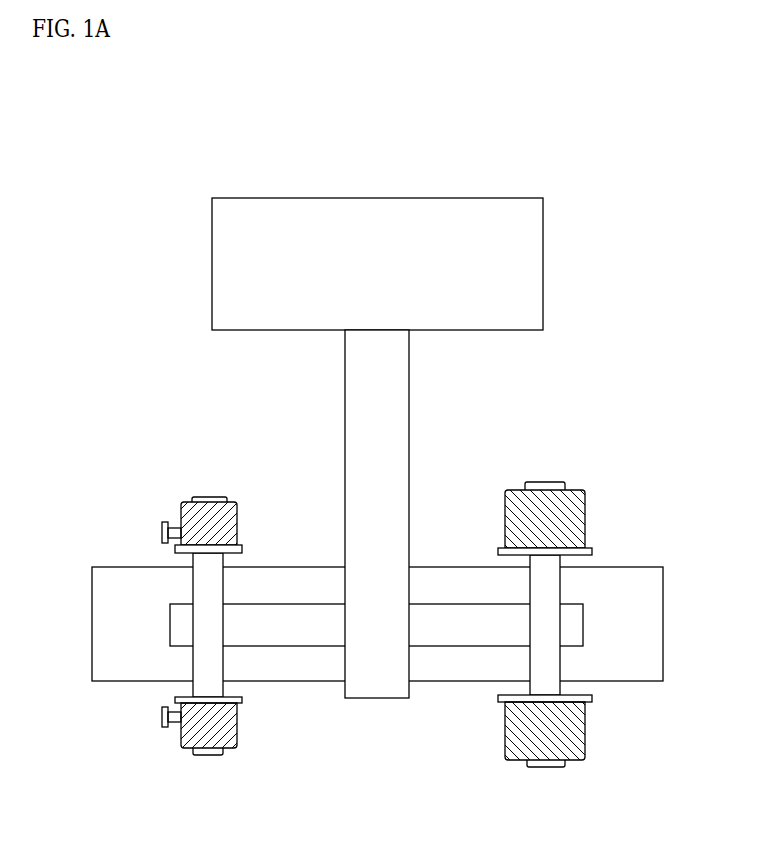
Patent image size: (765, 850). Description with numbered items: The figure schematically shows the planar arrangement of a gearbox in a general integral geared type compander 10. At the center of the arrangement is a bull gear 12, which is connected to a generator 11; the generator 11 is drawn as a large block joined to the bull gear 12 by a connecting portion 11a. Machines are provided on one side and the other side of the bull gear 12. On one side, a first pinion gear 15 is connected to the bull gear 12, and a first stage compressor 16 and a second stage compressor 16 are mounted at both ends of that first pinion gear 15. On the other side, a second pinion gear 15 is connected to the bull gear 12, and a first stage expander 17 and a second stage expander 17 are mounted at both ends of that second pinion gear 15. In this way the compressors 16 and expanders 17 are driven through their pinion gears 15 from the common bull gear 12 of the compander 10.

The integral geared type compander 10 is at (612, 95).
The generator 11 is at (401, 448).
The stem of display panel 11a is at (397, 422).
The bull gear 12 is at (432, 615).
The pinion gear 15 is at (203, 658).
The compressor 16 is at (227, 497).
The expander 17 is at (570, 485).